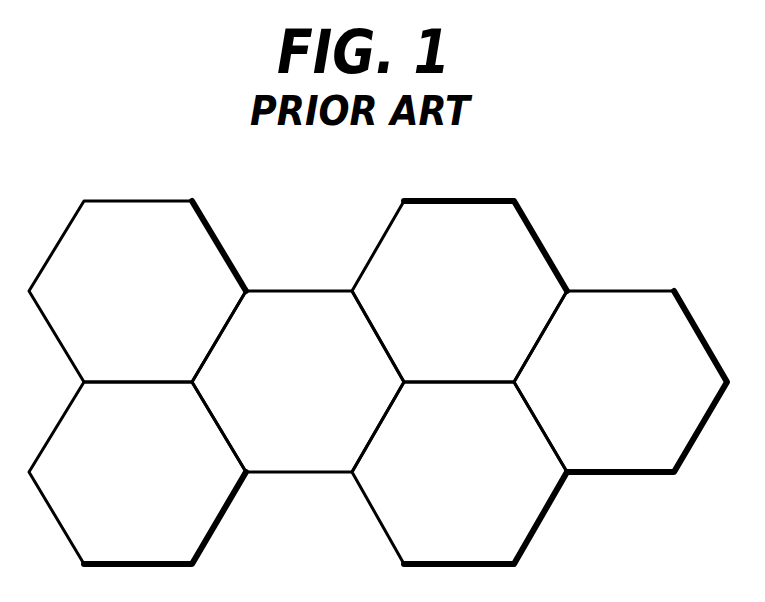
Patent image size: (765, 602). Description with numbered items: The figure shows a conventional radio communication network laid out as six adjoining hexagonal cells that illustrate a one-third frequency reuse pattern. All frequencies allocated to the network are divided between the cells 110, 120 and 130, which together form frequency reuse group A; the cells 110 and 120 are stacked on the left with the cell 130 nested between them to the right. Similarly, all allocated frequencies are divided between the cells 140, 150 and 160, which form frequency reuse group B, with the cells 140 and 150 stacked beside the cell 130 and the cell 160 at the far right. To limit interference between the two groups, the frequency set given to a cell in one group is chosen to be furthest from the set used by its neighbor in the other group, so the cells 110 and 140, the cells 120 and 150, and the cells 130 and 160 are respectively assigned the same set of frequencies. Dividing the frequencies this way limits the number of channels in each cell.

The cell 110 is at (167, 310).
The cell 120 is at (167, 492).
The cell 130 is at (328, 404).
The cell 140 is at (488, 310).
The cell 150 is at (493, 492).
The cell 160 is at (648, 404).